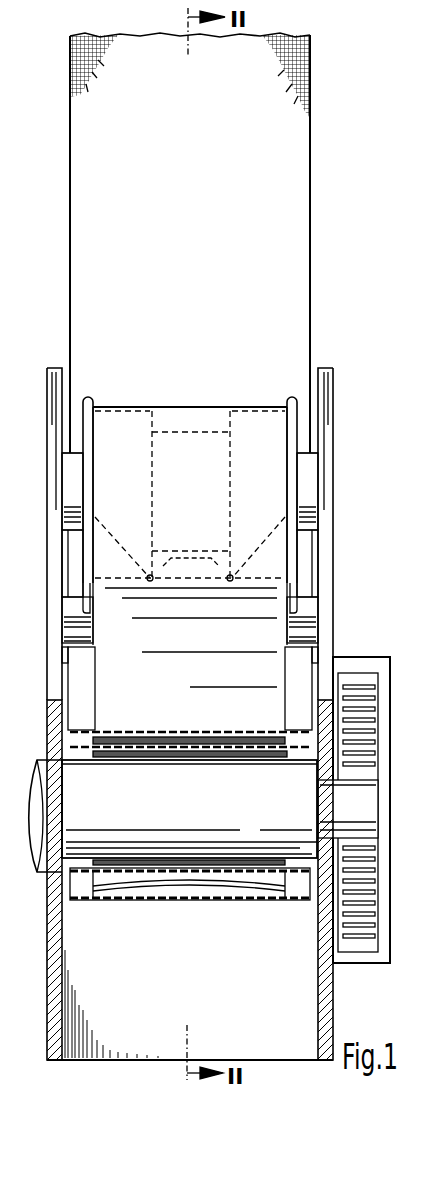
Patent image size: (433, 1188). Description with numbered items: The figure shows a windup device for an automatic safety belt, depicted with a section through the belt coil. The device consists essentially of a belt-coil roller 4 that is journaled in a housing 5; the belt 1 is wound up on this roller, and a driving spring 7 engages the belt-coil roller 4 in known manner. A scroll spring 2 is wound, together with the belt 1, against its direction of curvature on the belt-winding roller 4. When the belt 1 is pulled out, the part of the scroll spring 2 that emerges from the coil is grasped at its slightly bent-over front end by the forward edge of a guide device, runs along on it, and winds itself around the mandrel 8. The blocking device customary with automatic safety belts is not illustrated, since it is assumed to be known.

The belt 1 is at (302, 198).
The scroll spring 2 is at (278, 662).
The belt-coil roller 4 is at (300, 807).
The housing 5 is at (54, 1054).
The driving spring 7 is at (357, 932).
The mandrel 8 is at (297, 489).